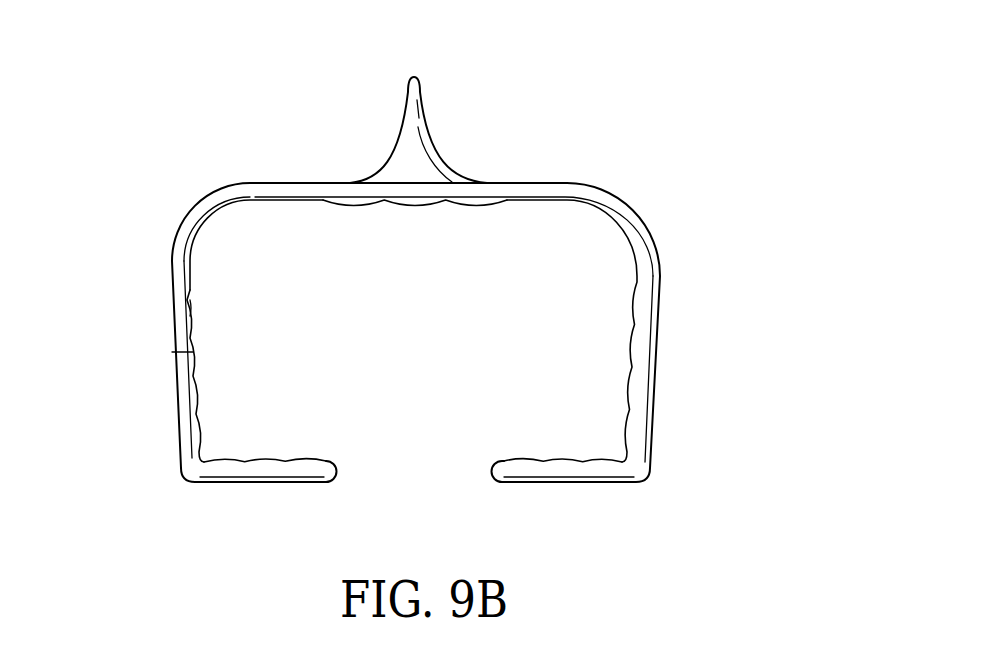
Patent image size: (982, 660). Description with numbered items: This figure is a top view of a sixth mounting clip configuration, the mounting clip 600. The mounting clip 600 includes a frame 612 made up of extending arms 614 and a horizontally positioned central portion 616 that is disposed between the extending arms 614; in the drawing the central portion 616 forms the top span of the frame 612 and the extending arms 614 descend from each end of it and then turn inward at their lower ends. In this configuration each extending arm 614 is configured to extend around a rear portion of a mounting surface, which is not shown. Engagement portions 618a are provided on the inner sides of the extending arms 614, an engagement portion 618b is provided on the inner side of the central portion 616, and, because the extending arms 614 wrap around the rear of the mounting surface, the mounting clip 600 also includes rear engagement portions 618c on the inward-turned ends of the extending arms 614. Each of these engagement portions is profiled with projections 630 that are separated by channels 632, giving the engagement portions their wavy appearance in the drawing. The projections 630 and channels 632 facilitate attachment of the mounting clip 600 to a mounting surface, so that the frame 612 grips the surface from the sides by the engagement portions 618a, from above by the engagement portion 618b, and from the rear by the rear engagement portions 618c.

The mounting clip 600 is at (657, 190).
The frame 612 is at (177, 412).
The extending arm 614 is at (270, 483).
The central portion 616 is at (537, 183).
The engagement portion 618a is at (200, 382).
The engagement portion 618b is at (412, 206).
The rear engagement portion 618c is at (310, 460).
The projection 630 is at (198, 332).
The channel 632 is at (172, 352).